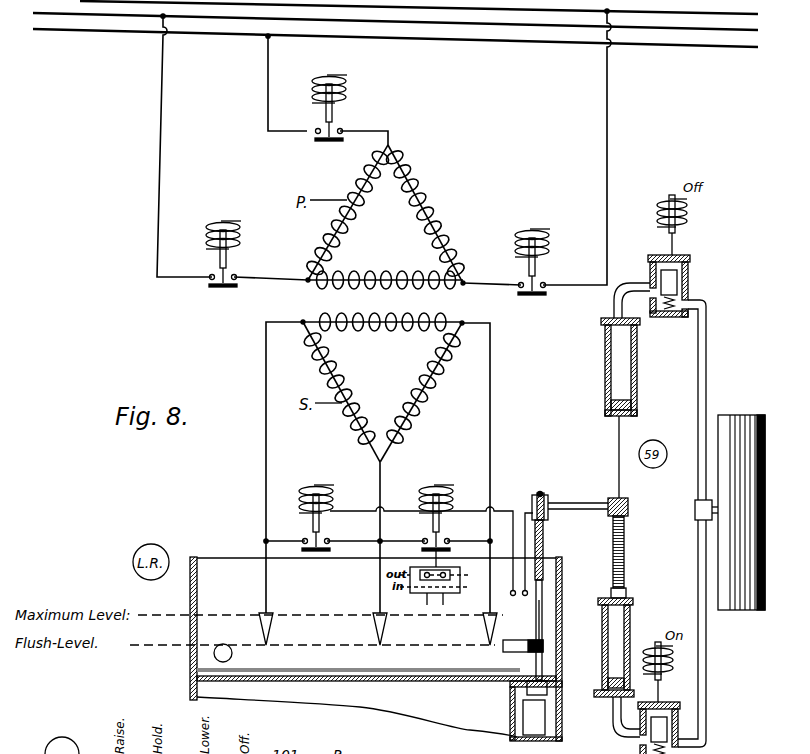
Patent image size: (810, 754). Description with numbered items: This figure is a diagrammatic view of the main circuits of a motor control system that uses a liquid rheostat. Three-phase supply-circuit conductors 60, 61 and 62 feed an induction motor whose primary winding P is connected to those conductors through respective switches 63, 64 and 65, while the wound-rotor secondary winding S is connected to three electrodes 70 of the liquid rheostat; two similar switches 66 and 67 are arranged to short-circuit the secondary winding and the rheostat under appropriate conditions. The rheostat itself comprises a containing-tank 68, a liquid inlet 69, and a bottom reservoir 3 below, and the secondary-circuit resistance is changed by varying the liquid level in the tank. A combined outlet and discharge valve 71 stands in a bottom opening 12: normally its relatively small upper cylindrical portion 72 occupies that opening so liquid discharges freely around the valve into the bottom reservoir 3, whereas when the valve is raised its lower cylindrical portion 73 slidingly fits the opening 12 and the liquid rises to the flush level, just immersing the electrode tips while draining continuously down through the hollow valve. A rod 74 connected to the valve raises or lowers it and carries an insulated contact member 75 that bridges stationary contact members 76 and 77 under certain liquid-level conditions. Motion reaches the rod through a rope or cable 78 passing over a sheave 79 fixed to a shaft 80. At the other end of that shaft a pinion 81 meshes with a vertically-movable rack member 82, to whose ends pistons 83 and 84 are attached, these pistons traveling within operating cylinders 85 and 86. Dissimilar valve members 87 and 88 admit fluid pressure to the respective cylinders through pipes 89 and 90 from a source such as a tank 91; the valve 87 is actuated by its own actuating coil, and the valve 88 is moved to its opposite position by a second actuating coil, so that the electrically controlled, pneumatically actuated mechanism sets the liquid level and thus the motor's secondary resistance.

The supply-circuit conductor 60 is at (84, 2).
The supply-circuit conductor 61 is at (108, 16).
The supply-circuit conductor 62 is at (127, 33).
The switch 63 is at (540, 276).
The switch 64 is at (215, 262).
The switch 65 is at (334, 126).
The switch 66 is at (313, 528).
The switch 67 is at (433, 531).
The containing-tank 68 is at (218, 567).
The liquid inlet 69 is at (213, 657).
The electrodes 70 is at (259, 630).
The combined outlet and discharge valve 71 is at (518, 694).
The upper cylindrical portion 72 is at (549, 684).
The lower cylindrical portion 73 is at (547, 717).
The rod 74 is at (545, 608).
The contact member 75 is at (522, 648).
The stationary contact member 76 is at (506, 604).
The stationary contact member 77 is at (524, 597).
The rope or cable 78 is at (545, 549).
The sheave 79 is at (533, 494).
The shaft 80 is at (573, 503).
The pinion 81 is at (630, 507).
The rack member 82 is at (626, 540).
The piston 83 is at (626, 683).
The piston 84 is at (633, 403).
The operating cylinder 85 is at (632, 612).
The operating cylinder 86 is at (637, 358).
The valve member 87 is at (640, 750).
The valve member 88 is at (690, 290).
The pipe or passage 89 is at (708, 680).
The pipe or passage 90 is at (708, 355).
The tank 91 is at (745, 415).
The bottom discharge opening 12 is at (556, 684).
The bottom reservoir 3 is at (381, 694).